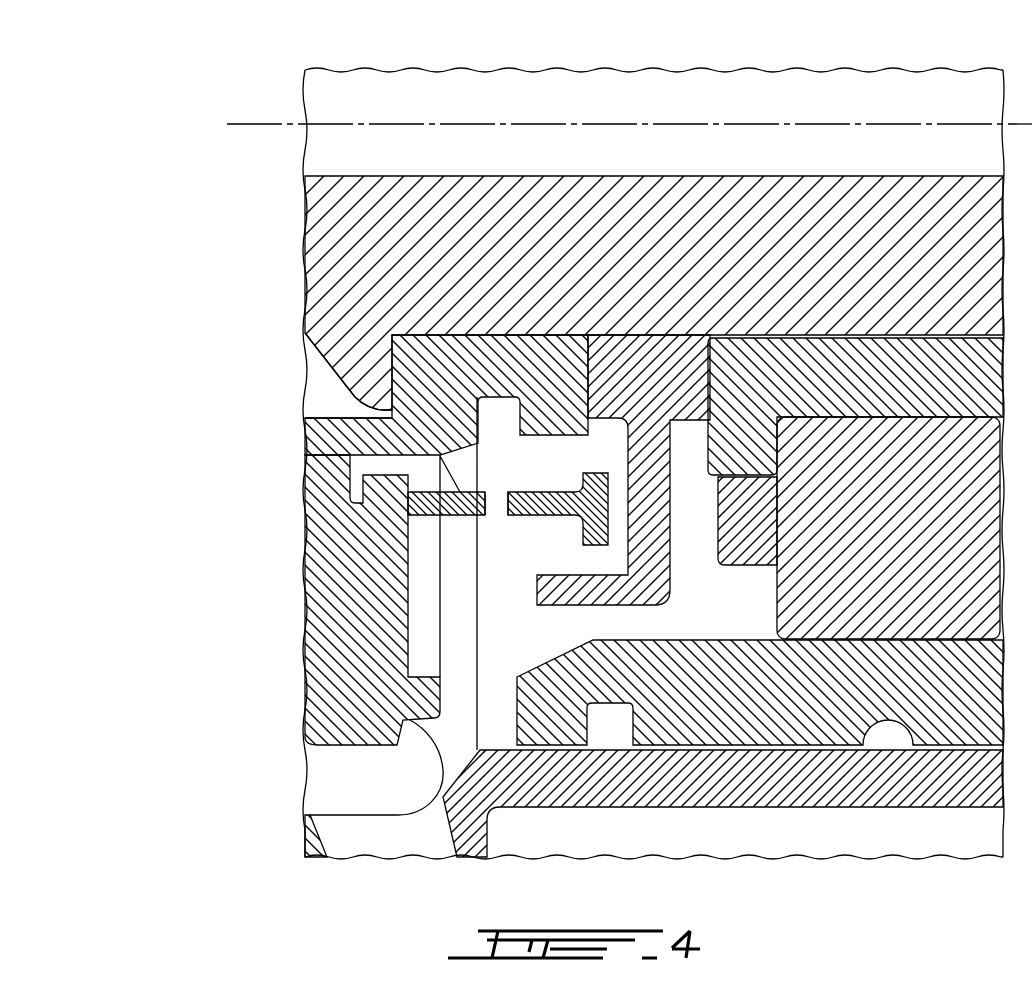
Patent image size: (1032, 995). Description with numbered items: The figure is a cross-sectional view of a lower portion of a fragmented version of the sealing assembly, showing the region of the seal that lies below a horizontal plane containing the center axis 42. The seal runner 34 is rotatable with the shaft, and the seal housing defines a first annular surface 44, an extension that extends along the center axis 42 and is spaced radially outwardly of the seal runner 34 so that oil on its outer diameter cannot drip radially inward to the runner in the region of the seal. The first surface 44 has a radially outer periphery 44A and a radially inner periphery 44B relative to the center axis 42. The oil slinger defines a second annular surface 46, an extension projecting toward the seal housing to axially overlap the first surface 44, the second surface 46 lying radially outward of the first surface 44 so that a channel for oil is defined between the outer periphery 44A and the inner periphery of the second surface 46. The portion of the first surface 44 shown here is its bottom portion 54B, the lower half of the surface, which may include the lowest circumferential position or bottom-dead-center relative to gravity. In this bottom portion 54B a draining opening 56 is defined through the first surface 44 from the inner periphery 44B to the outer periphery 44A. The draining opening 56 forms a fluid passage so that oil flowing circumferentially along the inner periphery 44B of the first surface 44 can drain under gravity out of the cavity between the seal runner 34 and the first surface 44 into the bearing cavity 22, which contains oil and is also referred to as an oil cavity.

The bearing cavity 22 is at (505, 645).
The seal runner 34 is at (450, 367).
The center axis 42 is at (253, 122).
The first annular surface 44 is at (425, 502).
The outer periphery 44A is at (527, 515).
The inner periphery 44B is at (392, 412).
The second annular surface 46 is at (585, 590).
The bottom portion 54B is at (252, 494).
The draining opening 56 is at (486, 501).